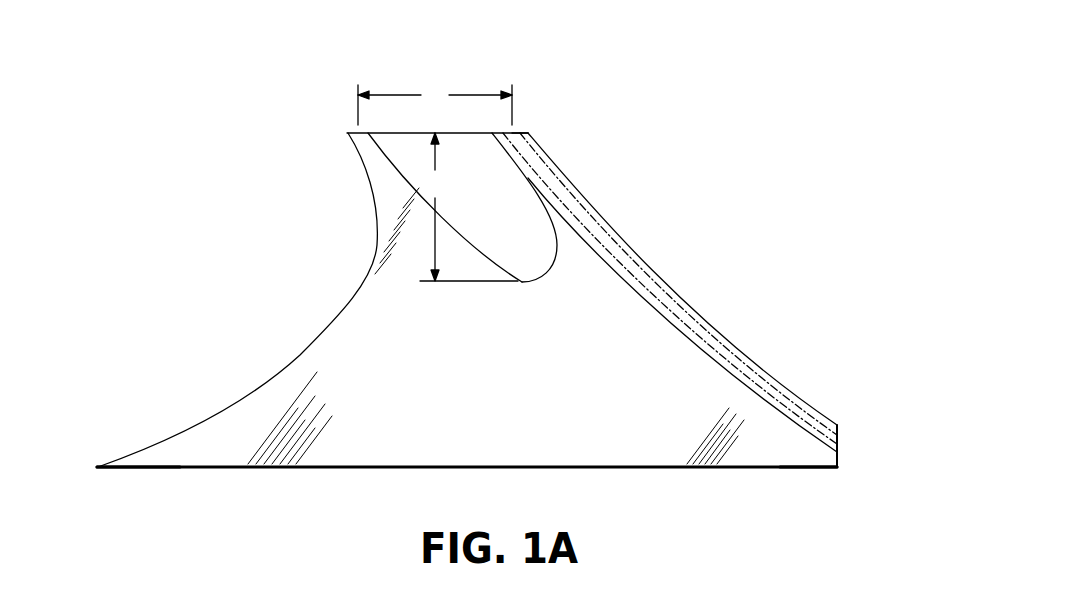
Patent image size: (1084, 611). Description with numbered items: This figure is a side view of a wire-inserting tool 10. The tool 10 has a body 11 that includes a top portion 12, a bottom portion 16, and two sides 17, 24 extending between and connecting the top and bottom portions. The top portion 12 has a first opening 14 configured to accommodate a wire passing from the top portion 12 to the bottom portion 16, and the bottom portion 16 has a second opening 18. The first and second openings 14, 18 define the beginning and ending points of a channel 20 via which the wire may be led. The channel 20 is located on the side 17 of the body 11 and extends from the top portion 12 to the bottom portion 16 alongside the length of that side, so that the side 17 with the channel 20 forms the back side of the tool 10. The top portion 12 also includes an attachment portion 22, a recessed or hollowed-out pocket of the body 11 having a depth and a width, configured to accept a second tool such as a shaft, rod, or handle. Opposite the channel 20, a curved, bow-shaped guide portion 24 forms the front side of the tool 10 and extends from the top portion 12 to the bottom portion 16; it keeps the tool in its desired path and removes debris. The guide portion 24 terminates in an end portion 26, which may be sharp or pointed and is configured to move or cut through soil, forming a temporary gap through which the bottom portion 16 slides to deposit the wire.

The tool 10 is at (645, 110).
The body 11 is at (593, 302).
The top portion 12 is at (338, 103).
The first opening 14 is at (519, 131).
The bottom portion 16 is at (839, 425).
The side 17 is at (735, 360).
The second opening 18 is at (838, 440).
The channel 20 is at (680, 317).
The attachment portion 22 is at (403, 180).
The guide portion 24 is at (318, 338).
The end portion 26 is at (97, 465).